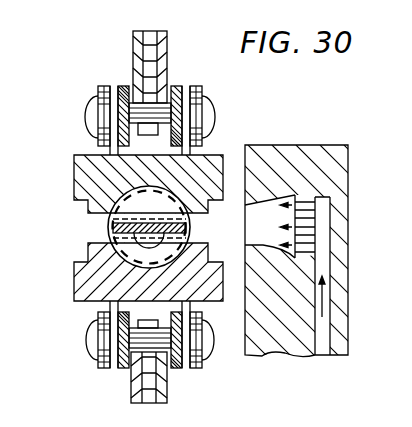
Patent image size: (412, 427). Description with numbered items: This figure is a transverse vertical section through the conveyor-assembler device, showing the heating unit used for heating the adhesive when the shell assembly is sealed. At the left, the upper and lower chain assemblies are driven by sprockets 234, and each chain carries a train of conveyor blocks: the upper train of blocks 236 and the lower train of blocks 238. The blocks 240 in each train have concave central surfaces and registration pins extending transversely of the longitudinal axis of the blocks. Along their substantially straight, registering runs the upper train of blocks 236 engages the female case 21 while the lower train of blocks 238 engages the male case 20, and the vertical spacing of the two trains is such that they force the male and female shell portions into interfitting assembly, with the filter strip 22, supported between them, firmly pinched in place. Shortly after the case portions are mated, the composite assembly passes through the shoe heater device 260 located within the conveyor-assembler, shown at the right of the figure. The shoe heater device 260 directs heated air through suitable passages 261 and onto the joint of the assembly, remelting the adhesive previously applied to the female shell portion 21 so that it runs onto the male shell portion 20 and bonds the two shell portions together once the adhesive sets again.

The male case 20 is at (132, 265).
The female case 21 is at (126, 191).
The filter strip 22 is at (168, 220).
The sprockets 234 is at (165, 67).
The upper train of conveyor blocks 236 is at (98, 85).
The lower train of conveyor blocks 238 is at (97, 368).
The conveyor block 240 is at (147, 228).
The shoe heater device 260 is at (222, 219).
The passages 261 is at (318, 246).